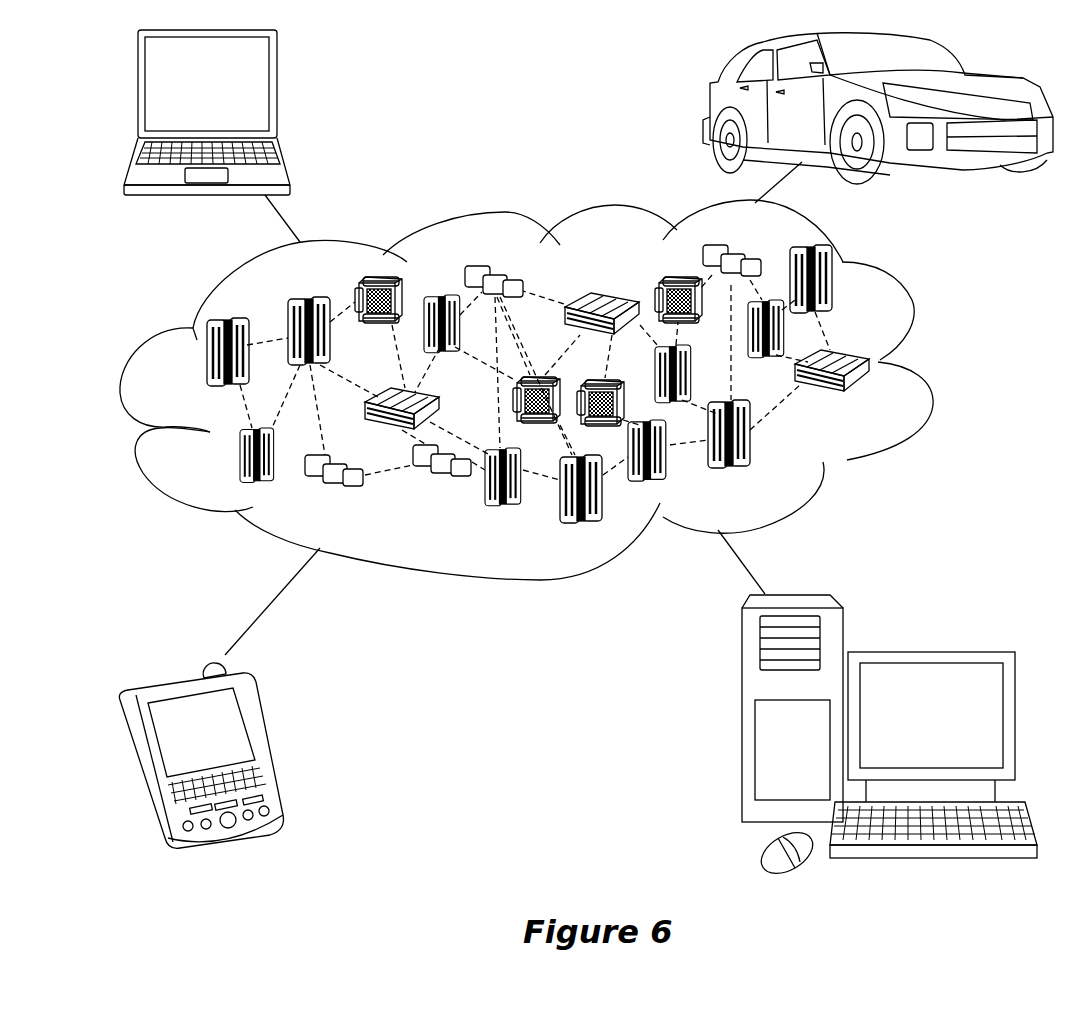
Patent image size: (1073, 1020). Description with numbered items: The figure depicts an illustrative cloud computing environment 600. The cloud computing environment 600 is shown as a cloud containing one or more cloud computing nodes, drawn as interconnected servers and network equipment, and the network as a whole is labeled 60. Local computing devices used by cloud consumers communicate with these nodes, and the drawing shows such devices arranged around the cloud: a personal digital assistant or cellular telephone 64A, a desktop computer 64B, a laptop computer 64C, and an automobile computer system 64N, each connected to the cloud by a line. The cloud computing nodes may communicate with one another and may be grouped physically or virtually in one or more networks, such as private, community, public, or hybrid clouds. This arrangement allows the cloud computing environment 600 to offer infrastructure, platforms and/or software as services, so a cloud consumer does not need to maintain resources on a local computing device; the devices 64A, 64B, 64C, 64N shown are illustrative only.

The network cloud 60 is at (930, 366).
The cloud computing environment 600 is at (885, 400).
The handheld device 64A is at (268, 745).
The desktop computer 64B is at (928, 652).
The laptop computer 64C is at (278, 91).
The vehicle 64N is at (710, 110).